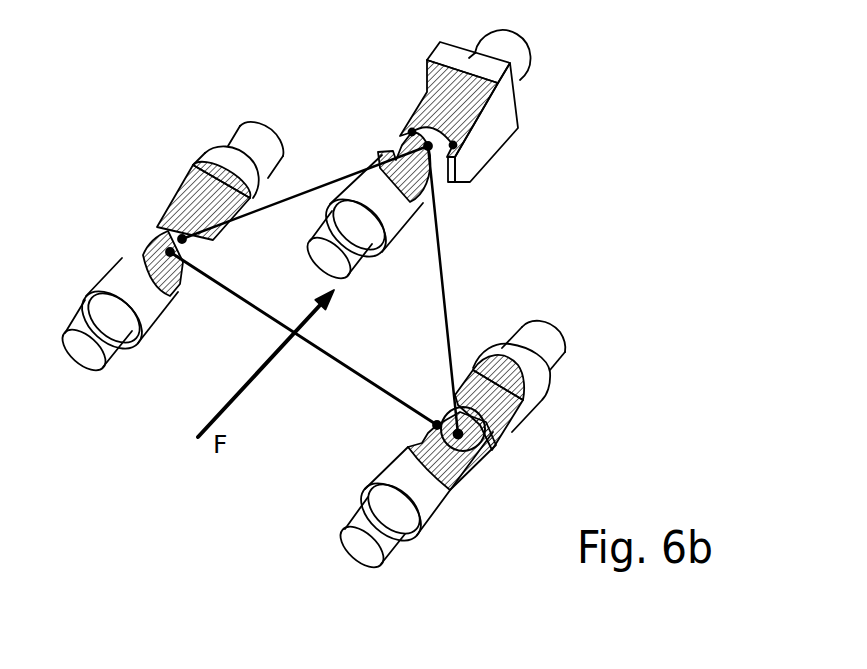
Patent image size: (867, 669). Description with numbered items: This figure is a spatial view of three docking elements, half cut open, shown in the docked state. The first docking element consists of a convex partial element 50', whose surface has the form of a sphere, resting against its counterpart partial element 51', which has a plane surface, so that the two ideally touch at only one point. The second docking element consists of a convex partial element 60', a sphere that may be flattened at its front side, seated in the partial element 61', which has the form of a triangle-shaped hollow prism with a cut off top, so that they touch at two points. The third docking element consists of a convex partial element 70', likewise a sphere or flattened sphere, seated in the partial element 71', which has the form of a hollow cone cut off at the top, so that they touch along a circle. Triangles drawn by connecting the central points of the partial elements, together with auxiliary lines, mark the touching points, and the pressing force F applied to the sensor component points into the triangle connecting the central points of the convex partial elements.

The convex partial element 50' is at (118, 304).
The partial element 51' is at (220, 181).
The convex partial element 60' is at (366, 209).
The partial element 61' is at (476, 106).
The convex partial element 70' is at (414, 493).
The partial element 71' is at (516, 385).